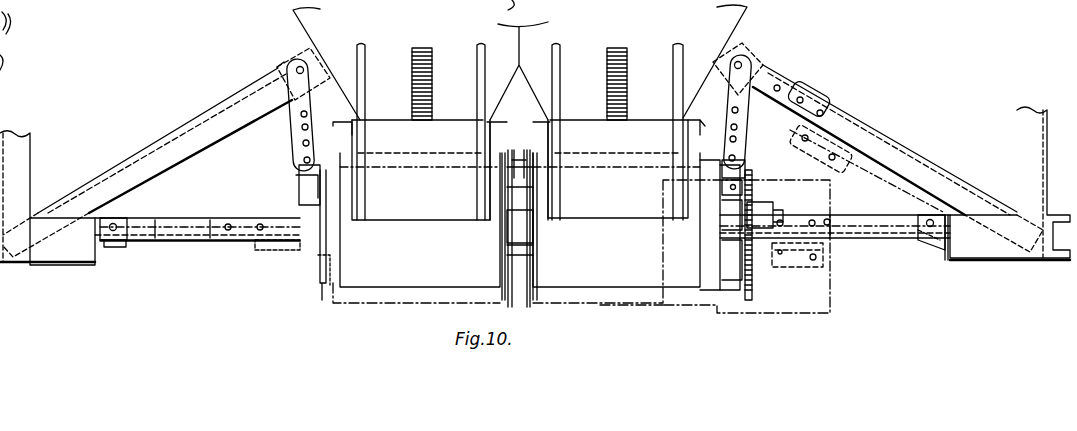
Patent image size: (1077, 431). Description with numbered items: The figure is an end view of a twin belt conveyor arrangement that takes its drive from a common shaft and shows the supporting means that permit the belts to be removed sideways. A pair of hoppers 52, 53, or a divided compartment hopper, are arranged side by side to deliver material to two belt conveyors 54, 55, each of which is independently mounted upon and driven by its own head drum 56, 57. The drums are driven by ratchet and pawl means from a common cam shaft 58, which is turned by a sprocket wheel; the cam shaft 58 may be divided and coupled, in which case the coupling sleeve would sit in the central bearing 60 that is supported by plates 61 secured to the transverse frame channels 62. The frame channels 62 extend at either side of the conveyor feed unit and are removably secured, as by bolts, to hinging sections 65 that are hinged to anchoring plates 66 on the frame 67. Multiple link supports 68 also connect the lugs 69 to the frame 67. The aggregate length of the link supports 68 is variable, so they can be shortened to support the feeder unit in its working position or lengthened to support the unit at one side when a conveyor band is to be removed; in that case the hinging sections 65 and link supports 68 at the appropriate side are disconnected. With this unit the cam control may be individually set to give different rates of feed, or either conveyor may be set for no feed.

The hopper 52 is at (316, 30).
The hopper 53 is at (706, 25).
The belt conveyor 54 is at (392, 267).
The belt conveyor 55 is at (578, 278).
The head drum 56 is at (322, 280).
The head drum 57 is at (710, 268).
The cam shaft 58 is at (778, 210).
The central bearing 60 is at (520, 228).
The plates 61 is at (516, 172).
The transverse frame channels 62 is at (278, 240).
The hinging sections 65 is at (212, 226).
The anchoring plates 66 is at (112, 247).
The frame 67 is at (212, 119).
The link supports 68 is at (294, 133).
The lugs 69 is at (302, 191).